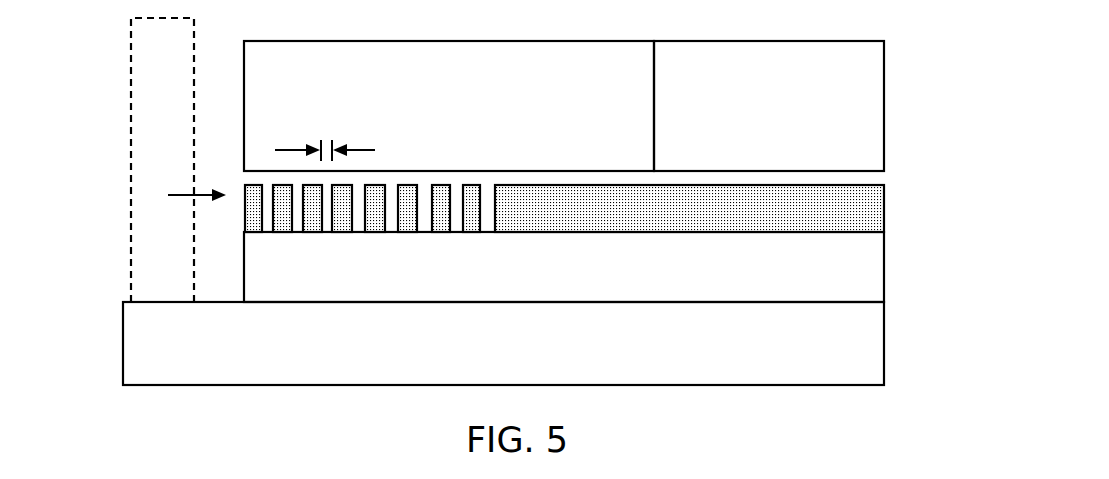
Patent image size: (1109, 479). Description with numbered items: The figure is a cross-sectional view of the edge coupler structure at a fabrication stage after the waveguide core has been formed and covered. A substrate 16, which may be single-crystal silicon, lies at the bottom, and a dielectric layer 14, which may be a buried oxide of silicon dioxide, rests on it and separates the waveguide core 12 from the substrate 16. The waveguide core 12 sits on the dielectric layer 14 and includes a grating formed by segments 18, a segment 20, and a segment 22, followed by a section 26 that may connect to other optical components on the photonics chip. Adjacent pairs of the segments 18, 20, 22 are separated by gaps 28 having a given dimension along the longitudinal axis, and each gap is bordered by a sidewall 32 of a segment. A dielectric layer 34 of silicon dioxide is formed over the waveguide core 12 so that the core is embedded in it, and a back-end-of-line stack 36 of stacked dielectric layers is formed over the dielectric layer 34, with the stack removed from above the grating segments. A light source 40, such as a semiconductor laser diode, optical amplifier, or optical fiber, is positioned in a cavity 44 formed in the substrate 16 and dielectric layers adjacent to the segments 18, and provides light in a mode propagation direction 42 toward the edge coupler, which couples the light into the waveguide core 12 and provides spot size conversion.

The waveguide core 12 is at (758, 156).
The dielectric layer 14 is at (845, 273).
The substrate 16 is at (838, 339).
The segments 18 is at (342, 218).
The segment 20 is at (441, 190).
The segment 22 is at (473, 190).
The section 26 is at (838, 219).
The gaps 28 is at (325, 131).
The sidewall 32 is at (832, 178).
The dielectric layer 34 is at (838, 91).
The back-end-of-line stack 36 is at (268, 67).
The light source 40 is at (168, 95).
The mode propagation direction 42 is at (190, 195).
The cavity 44 is at (232, 290).